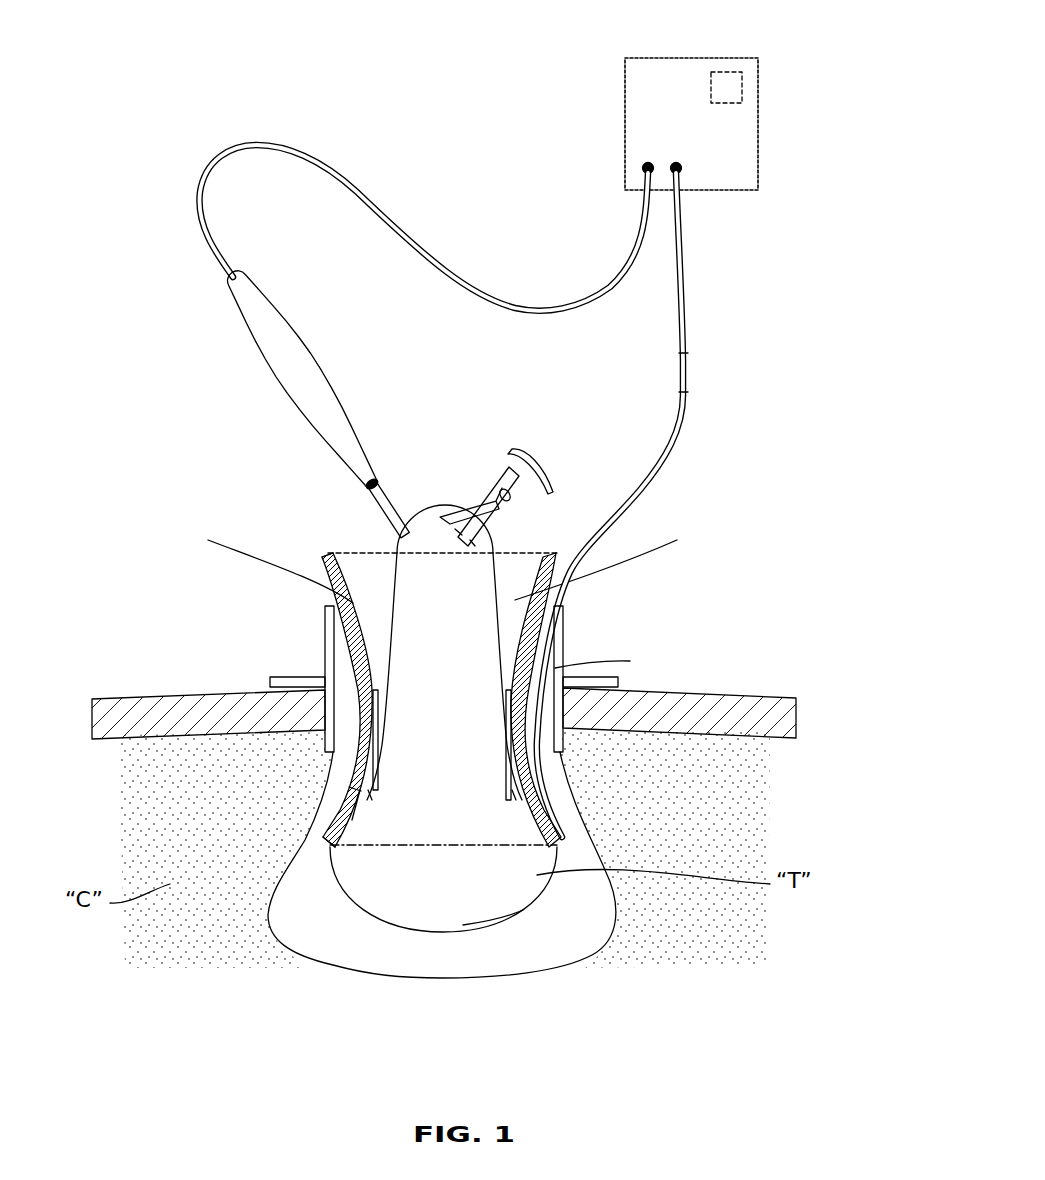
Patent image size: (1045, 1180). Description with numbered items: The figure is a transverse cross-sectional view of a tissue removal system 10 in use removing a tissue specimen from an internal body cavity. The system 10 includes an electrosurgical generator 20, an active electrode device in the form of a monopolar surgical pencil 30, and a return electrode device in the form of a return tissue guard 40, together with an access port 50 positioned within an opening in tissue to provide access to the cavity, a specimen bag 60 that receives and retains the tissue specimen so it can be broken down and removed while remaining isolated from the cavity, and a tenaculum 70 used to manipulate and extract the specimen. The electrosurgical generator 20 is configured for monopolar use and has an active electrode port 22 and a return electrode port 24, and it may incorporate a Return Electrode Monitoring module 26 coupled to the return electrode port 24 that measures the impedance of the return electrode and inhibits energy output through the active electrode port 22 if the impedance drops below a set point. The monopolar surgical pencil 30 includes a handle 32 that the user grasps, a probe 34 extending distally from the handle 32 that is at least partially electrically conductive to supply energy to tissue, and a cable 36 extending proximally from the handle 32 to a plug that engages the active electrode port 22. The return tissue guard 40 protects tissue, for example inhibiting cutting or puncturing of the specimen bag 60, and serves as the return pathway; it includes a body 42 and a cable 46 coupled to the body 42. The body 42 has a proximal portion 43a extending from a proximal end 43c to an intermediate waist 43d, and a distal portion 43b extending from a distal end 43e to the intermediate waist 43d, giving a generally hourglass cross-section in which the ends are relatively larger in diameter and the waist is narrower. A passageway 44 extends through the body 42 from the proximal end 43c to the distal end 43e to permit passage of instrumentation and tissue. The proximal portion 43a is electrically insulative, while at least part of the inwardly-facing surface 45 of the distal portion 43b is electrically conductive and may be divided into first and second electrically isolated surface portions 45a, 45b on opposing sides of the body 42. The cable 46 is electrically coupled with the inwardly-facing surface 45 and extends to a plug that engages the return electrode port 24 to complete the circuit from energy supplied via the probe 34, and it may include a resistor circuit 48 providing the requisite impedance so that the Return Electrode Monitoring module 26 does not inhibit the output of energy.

The tissue removal system 10 is at (404, 61).
The electrosurgical generator 20 is at (690, 130).
The active electrode port 22 is at (645, 163).
The return electrode port 24 is at (680, 172).
The Return Electrode Monitoring (REM) module 26 is at (744, 88).
The monopolar surgical pencil 30 is at (300, 404).
The handle 32 is at (318, 383).
The probe 34 is at (390, 507).
The cable 36 is at (430, 263).
The return tissue guard 40 is at (388, 759).
The body 42 is at (531, 620).
The proximal portion 43a is at (340, 600).
The distal portion 43b is at (352, 793).
The proximal end 43c is at (327, 552).
The intermediate waist 43d is at (367, 672).
The distal end 43e is at (333, 850).
The passageway 44 is at (563, 580).
The inwardly-facing surface 45 is at (358, 822).
The first inwardly-facing surface portion 45a is at (515, 790).
The second inwardly-facing surface portion 45b is at (370, 795).
The cable 46 is at (650, 505).
The resistor circuit 48 is at (690, 380).
The access port 50 is at (325, 639).
The specimen bag 60 is at (543, 967).
The tenaculum 70 is at (490, 470).